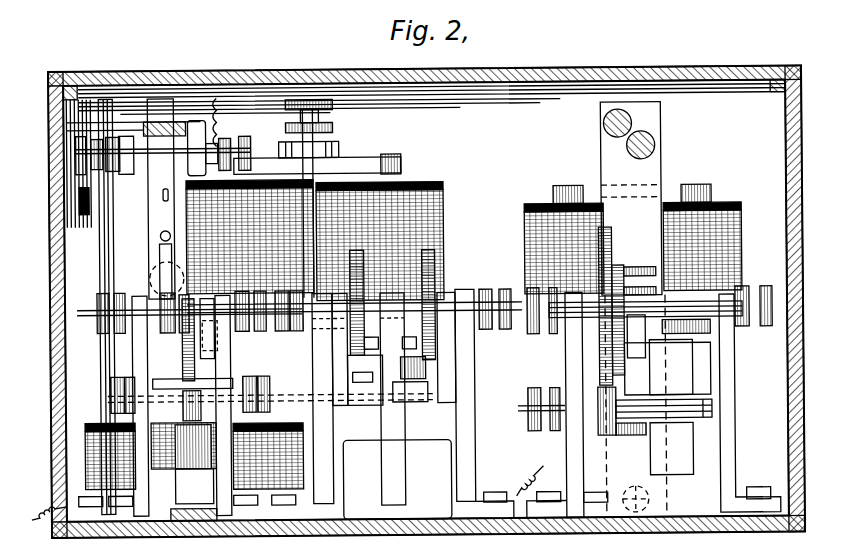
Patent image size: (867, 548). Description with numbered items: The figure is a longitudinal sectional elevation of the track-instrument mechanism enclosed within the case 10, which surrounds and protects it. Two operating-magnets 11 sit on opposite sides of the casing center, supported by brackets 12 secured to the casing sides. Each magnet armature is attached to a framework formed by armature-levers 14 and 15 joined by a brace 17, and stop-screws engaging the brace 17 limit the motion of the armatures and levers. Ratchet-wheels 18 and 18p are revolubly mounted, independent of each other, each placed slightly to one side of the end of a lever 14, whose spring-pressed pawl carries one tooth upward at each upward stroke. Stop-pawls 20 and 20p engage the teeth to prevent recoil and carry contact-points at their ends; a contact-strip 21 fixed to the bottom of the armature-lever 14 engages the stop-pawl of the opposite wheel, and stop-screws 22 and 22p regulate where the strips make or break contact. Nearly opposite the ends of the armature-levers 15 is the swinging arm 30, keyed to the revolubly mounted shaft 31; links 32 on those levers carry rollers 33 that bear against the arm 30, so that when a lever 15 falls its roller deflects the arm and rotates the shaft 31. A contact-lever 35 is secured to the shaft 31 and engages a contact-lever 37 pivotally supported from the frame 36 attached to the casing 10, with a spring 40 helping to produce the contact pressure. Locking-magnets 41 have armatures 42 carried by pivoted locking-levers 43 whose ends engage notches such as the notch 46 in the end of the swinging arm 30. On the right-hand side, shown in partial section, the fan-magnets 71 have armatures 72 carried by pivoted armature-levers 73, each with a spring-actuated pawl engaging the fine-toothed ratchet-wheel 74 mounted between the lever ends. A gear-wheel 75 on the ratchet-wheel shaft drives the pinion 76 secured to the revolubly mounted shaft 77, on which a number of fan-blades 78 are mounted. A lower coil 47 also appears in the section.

The case 10 is at (801, 244).
The operating-magnet 11 is at (244, 222).
The bracket 12 is at (340, 147).
The armature-lever 14 is at (406, 344).
The armature-lever 15 is at (214, 353).
The brace 17 is at (268, 334).
The ratchet-wheel 18 is at (431, 338).
The ratchet-wheel 18p is at (353, 344).
The stop-pawl 20 is at (437, 371).
The stop-pawl 20p is at (376, 395).
The contact-strip 21 is at (345, 400).
The stop-screw 22 is at (372, 356).
The stop-screw 22p is at (452, 351).
The swinging arm 30 is at (190, 362).
The shaft 31 is at (184, 340).
The link 32 is at (214, 335).
The roller 33 is at (193, 297).
The contact-lever 35 is at (152, 283).
The frame 36 is at (113, 128).
The contact-lever 37 is at (160, 210).
The spring 40 is at (85, 536).
The locking-magnet 41 is at (110, 456).
The armature 42 is at (108, 400).
The locking-lever 43 is at (214, 356).
The notch 46 is at (183, 380).
The coil 47 is at (300, 451).
The fan-magnet 71 is at (563, 246).
The armature 72 is at (560, 336).
The armature-lever 73 is at (643, 384).
The fine-toothed ratchet-wheel 74 is at (622, 274).
The gear-wheel 75 is at (605, 237).
The pinion 76 is at (600, 440).
The shaft 77 is at (628, 441).
The fan-blade 78 is at (650, 392).